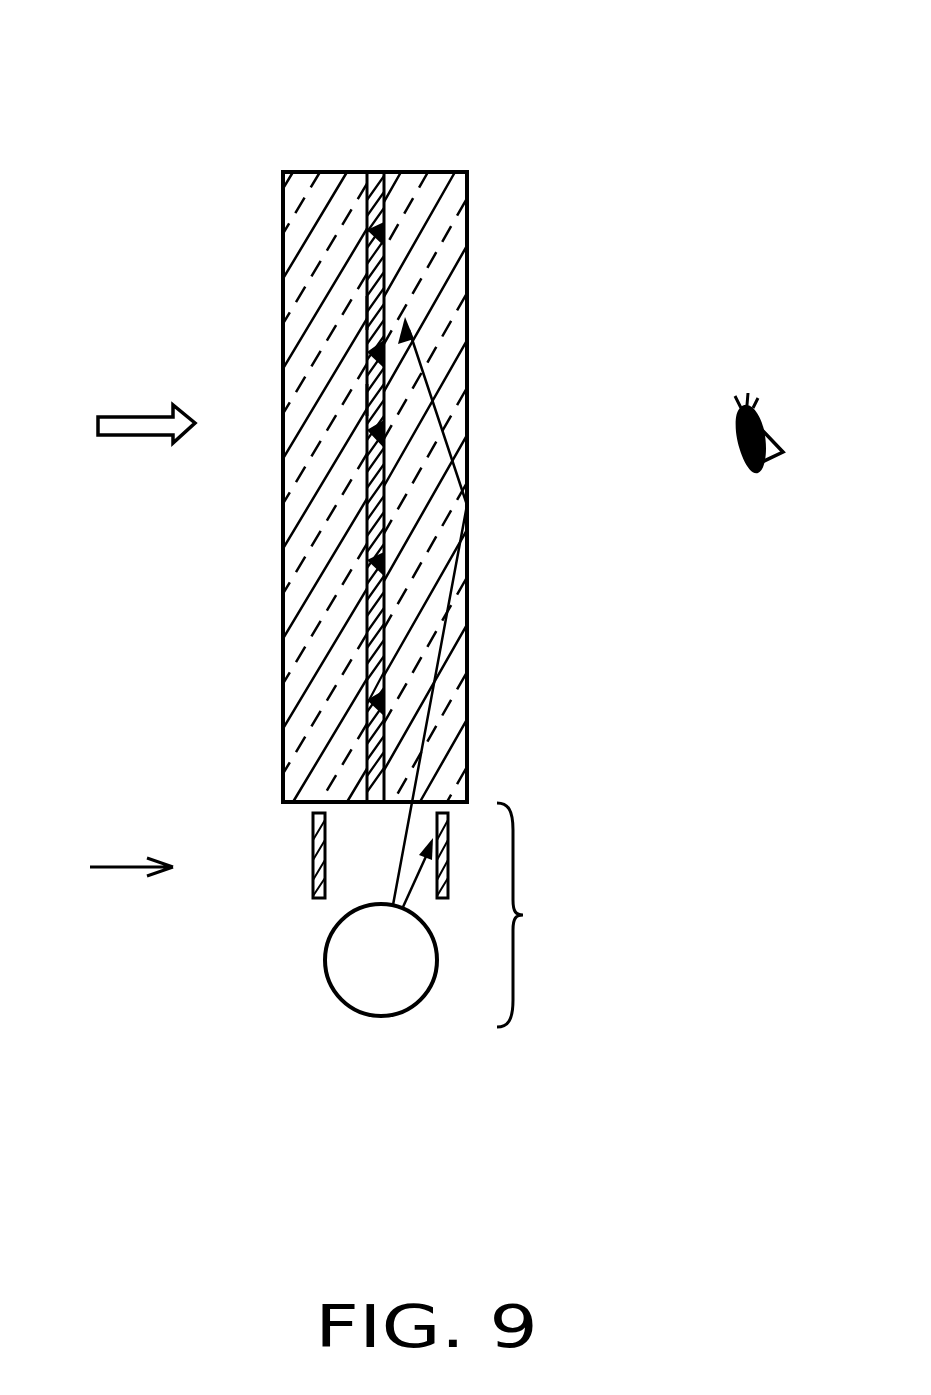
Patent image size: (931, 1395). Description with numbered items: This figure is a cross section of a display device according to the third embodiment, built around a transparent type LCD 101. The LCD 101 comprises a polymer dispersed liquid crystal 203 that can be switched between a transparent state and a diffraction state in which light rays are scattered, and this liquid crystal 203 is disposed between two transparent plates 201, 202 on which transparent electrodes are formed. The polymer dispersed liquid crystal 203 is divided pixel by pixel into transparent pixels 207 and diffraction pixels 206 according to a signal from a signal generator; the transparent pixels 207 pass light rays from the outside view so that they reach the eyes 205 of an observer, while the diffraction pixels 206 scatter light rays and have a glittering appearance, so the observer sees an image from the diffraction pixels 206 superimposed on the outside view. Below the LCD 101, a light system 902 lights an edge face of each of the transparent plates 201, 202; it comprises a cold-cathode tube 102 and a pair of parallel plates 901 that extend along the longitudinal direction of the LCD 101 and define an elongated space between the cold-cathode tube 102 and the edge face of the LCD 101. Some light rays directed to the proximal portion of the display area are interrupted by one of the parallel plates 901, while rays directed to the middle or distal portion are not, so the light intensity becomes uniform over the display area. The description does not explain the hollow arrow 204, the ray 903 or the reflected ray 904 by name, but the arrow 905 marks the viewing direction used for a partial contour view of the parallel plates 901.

The transparent type LCD 101 is at (462, 82).
The cold-cathode tube 102 is at (345, 982).
The transparent plate 201 is at (440, 235).
The transparent plate 202 is at (297, 233).
The polymer dispersed liquid crystal 203 is at (370, 173).
The incident external light direction 204 is at (138, 440).
The eyes of an observer 205 is at (772, 462).
The diffraction pixels 206 is at (367, 400).
The transparent pixels 207 is at (367, 313).
The parallel plates 901 is at (315, 865).
The light system 902 is at (551, 915).
The light guide element 903 is at (417, 890).
The reflected light ray 904 is at (440, 357).
The arrow 905 is at (125, 872).